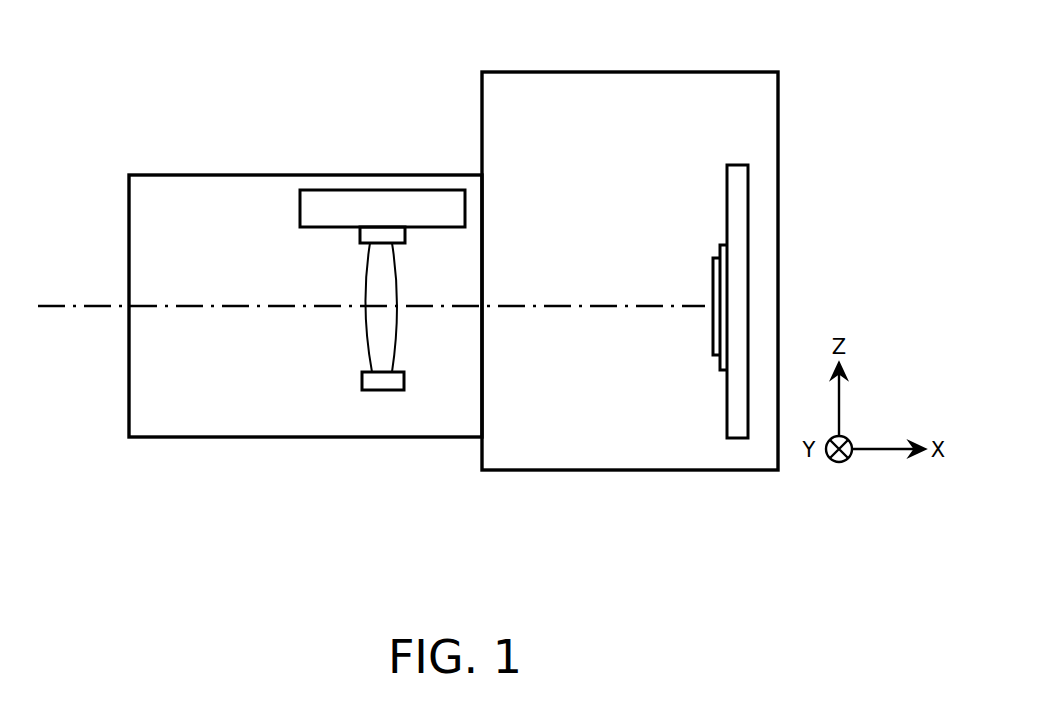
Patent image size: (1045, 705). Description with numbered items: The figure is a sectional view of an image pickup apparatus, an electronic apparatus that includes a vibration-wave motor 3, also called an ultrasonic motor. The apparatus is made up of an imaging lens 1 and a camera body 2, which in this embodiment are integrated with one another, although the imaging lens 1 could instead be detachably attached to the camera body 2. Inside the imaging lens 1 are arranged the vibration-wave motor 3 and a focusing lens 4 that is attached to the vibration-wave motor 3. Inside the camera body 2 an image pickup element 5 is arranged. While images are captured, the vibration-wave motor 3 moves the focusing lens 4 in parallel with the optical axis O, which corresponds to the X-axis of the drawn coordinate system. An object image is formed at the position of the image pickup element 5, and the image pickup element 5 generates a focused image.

The optical axis O is at (95, 305).
The imaging lens 1 is at (135, 175).
The camera body 2 is at (483, 71).
The vibration-wave motor 3 is at (368, 189).
The focusing lens 4 is at (365, 308).
The image pickup element 5 is at (723, 370).